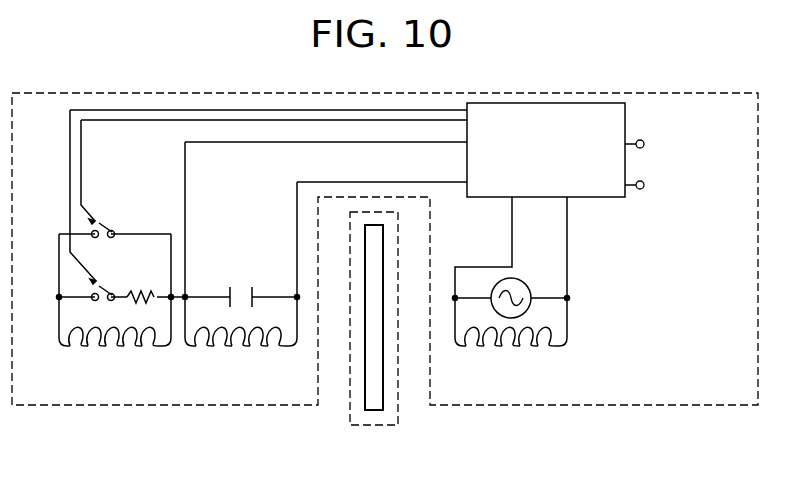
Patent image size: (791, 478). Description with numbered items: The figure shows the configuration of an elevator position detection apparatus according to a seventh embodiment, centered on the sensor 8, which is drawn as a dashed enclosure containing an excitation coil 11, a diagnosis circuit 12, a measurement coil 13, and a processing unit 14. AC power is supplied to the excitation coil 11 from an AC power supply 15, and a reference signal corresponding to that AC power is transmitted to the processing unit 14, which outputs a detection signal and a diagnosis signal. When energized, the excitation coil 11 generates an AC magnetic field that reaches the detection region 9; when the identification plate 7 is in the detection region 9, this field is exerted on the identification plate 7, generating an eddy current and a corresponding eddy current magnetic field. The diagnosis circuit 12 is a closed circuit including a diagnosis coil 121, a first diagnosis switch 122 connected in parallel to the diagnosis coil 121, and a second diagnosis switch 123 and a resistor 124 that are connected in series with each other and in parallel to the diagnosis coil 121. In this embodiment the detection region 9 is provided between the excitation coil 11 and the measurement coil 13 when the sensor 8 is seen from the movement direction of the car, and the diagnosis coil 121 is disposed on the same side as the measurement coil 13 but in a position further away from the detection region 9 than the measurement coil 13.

The identification plate 7 is at (364, 386).
The sensor 8 is at (652, 92).
The detection region 9 is at (415, 410).
The excitation coil 11 is at (511, 323).
The diagnosis circuit 12 is at (105, 300).
The measurement coil 13 is at (231, 350).
The processing unit 14 is at (610, 198).
The AC power supply 15 is at (525, 276).
The diagnosis coil 121 is at (105, 348).
The first diagnosis switch 122 is at (110, 227).
The second diagnosis switch 123 is at (107, 290).
The resistor 124 is at (143, 290).